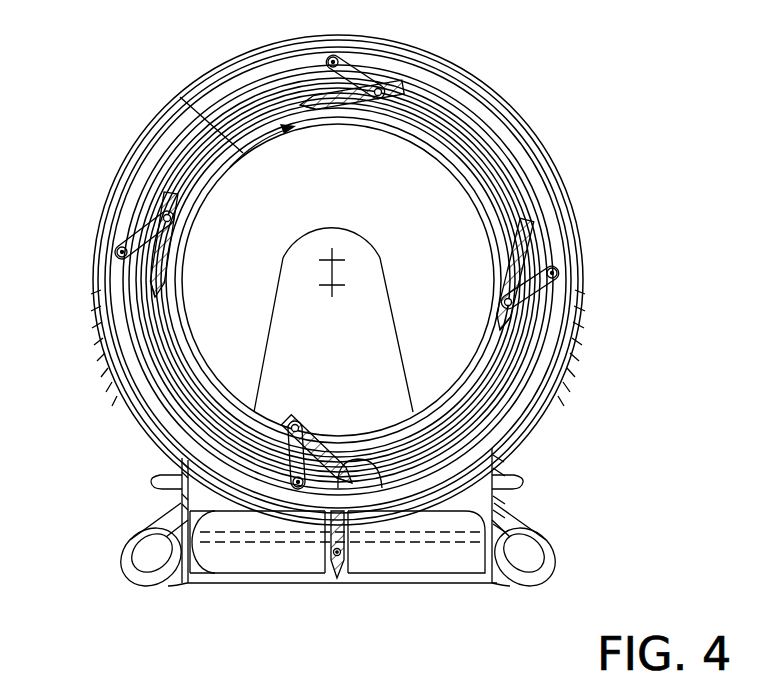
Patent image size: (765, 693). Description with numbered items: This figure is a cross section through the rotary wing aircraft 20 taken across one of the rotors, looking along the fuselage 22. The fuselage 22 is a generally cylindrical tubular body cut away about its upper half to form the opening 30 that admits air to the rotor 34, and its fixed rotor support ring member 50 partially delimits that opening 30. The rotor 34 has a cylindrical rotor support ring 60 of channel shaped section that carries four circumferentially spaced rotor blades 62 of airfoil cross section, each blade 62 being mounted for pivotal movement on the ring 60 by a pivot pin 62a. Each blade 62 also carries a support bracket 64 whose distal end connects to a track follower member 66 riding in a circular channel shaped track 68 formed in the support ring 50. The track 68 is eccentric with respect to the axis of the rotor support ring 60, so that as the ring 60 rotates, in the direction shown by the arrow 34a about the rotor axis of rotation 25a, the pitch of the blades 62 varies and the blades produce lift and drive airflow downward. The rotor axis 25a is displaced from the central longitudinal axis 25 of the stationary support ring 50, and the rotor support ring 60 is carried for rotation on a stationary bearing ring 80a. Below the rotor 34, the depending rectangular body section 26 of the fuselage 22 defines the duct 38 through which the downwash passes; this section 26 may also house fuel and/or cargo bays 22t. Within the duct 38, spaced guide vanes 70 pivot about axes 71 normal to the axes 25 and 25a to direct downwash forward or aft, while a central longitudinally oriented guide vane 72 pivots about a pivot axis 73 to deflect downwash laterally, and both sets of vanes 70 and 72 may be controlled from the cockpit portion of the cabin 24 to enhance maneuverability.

The rotary wing aircraft 20 is at (570, 126).
The fuselage 22 is at (580, 365).
The fuel and/or cargo bays 22t is at (126, 552).
The cabin 24 is at (332, 212).
The central longitudinal axis 25 is at (338, 292).
The rotor axis of rotation 25a is at (342, 256).
The rectangular body section 26 is at (548, 522).
The opening 30 is at (98, 272).
The rotor 34 is at (400, 88).
The arrow 34a is at (190, 96).
The duct 38 is at (215, 580).
The rotor support ring member 50 is at (258, 58).
The rotor support ring 60 is at (503, 190).
The rotor blade 62 is at (343, 100).
The pivot pin 62a is at (397, 108).
The support bracket 64 is at (385, 58).
The track follower member 66 is at (117, 250).
The channel shaped track 68 is at (545, 192).
The guide vane 70 is at (226, 582).
The pivot axis 71 is at (503, 458).
The longitudinally oriented guide vane 72 is at (350, 578).
The pivot axis 73 is at (325, 565).
The bearing ring 80a is at (142, 388).